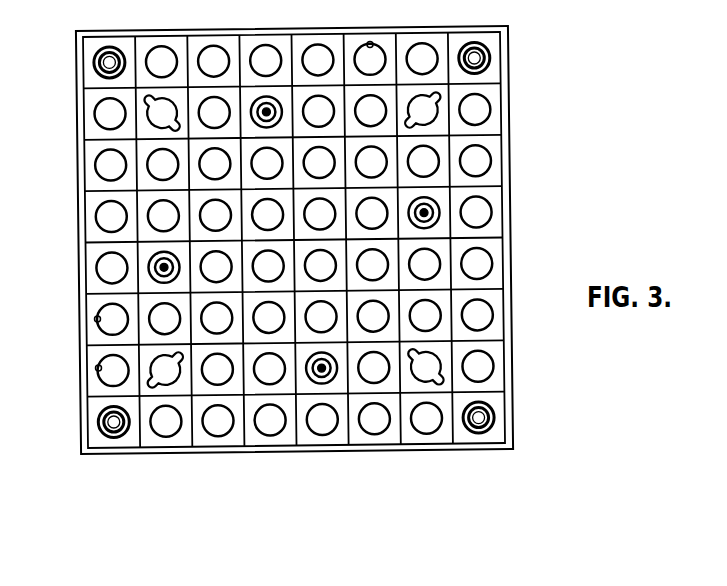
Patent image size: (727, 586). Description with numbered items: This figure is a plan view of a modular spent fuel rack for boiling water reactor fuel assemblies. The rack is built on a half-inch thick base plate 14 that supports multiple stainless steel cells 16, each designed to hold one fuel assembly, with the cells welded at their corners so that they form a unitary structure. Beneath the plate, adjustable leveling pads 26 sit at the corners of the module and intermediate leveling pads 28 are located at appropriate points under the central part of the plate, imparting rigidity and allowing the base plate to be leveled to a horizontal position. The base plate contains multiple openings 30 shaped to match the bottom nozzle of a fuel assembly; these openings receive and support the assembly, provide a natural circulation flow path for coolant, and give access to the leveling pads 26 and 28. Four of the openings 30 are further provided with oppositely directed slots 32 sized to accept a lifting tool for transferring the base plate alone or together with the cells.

The base plate 14 is at (512, 405).
The cells 16 is at (505, 275).
The adjustable leveling pads 26 is at (95, 60).
The intermediate leveling pads 28 is at (262, 98).
The openings 30 is at (373, 44).
The slots 32 is at (146, 97).